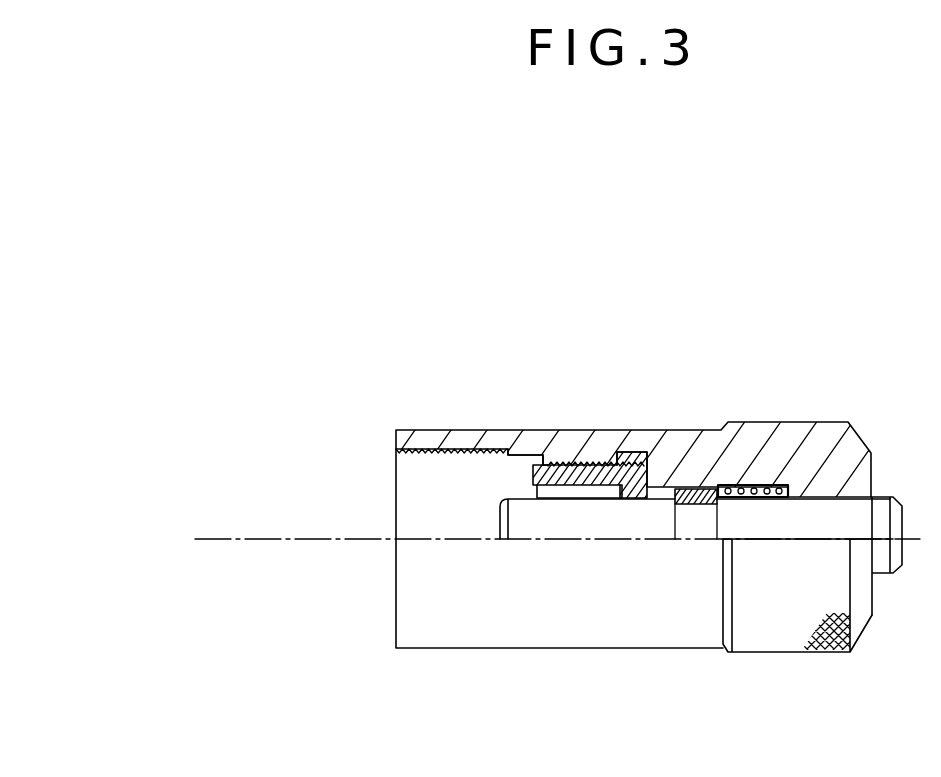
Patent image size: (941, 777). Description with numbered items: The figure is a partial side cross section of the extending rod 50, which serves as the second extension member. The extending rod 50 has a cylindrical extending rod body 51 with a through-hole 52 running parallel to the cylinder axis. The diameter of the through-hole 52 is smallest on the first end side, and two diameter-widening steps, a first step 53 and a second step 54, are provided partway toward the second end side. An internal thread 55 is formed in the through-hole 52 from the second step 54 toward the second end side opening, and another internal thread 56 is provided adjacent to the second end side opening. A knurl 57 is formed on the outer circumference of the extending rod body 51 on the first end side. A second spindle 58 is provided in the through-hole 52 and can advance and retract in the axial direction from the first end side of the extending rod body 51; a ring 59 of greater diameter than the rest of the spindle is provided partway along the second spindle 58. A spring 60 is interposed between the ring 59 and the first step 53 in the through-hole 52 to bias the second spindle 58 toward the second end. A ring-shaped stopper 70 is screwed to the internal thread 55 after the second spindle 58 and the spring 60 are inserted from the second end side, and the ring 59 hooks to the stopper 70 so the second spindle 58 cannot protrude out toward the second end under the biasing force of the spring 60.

The extending rod 50 is at (658, 321).
The extending rod body 51 is at (694, 430).
The through-hole 52 is at (510, 450).
The first step 53 is at (790, 489).
The second step 54 is at (622, 453).
The internal thread 55 is at (572, 460).
The internal thread 56 is at (445, 450).
The knurl 57 is at (822, 654).
The second spindle 58 is at (800, 520).
The ring 59 is at (697, 506).
The spring 60 is at (764, 486).
The stopper 70 is at (637, 500).